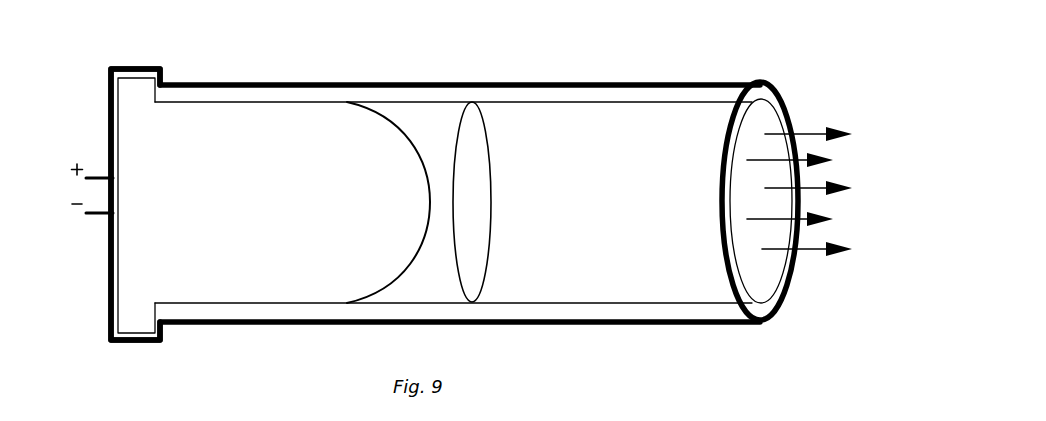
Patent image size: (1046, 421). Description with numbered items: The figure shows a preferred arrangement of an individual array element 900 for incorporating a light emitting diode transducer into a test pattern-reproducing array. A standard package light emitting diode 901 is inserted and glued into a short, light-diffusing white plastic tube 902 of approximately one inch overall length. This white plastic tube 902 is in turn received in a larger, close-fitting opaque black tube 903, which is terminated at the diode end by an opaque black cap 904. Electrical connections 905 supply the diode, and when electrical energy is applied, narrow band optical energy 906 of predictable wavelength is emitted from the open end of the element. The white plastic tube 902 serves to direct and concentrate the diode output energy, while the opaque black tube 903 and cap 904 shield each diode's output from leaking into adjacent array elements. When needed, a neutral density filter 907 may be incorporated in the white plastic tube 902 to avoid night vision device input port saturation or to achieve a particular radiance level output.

The laser assembly 900 is at (496, 62).
The light emitting diode 901 is at (274, 203).
The light-diffusing white plastic tube 902 is at (609, 302).
The opaque black tube 903 is at (636, 322).
The opaque black cap 904 is at (166, 61).
The electrical terminals 905 is at (68, 200).
The output light beam 906 is at (901, 140).
The neutral density filter 907 is at (491, 156).